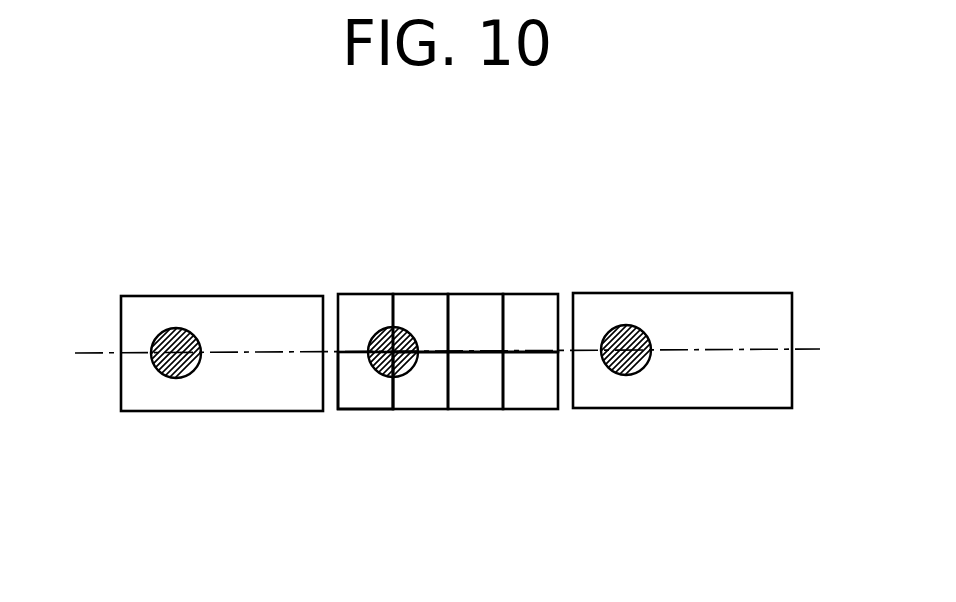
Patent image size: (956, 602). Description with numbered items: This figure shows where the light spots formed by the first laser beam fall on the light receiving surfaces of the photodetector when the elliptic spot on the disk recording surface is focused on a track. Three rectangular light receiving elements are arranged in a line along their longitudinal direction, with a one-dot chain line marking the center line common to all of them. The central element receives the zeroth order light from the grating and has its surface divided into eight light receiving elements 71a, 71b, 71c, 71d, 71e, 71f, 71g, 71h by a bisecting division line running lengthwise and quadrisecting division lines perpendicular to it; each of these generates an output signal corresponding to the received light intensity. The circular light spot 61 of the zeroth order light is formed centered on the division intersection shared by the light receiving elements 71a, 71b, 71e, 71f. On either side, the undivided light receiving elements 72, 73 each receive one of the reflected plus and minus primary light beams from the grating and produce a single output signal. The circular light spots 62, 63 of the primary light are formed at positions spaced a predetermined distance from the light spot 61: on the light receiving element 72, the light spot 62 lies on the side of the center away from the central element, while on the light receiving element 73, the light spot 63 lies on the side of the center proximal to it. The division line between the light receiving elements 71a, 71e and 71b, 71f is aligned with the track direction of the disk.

The circular light spot of 0th order light 61 is at (372, 358).
The circular light spot of primary light 62 is at (181, 377).
The circular light spot of primary light 63 is at (631, 375).
The light receiving element 71a is at (365, 294).
The light receiving element 71b is at (427, 294).
The light receiving element 71c is at (477, 294).
The light receiving element 71d is at (533, 294).
The light receiving element 71e is at (367, 410).
The light receiving element 71f is at (422, 410).
The light receiving element 71g is at (488, 410).
The light receiving element 71h is at (537, 410).
The light receiving element 72 is at (223, 296).
The light receiving element 73 is at (697, 293).